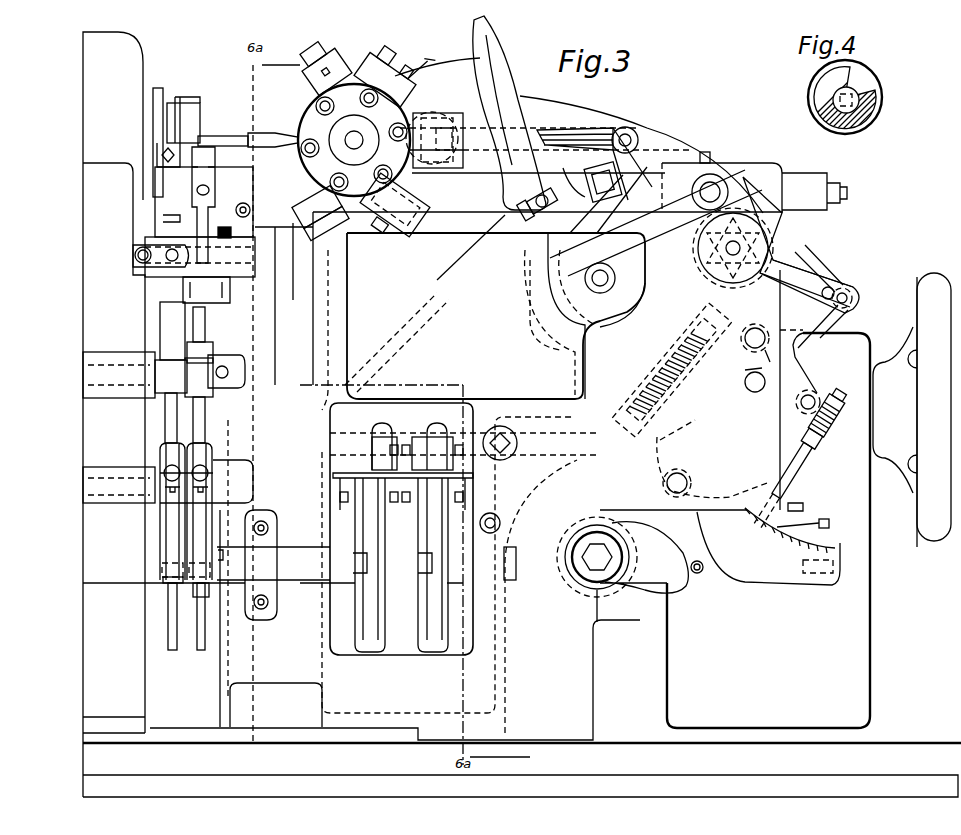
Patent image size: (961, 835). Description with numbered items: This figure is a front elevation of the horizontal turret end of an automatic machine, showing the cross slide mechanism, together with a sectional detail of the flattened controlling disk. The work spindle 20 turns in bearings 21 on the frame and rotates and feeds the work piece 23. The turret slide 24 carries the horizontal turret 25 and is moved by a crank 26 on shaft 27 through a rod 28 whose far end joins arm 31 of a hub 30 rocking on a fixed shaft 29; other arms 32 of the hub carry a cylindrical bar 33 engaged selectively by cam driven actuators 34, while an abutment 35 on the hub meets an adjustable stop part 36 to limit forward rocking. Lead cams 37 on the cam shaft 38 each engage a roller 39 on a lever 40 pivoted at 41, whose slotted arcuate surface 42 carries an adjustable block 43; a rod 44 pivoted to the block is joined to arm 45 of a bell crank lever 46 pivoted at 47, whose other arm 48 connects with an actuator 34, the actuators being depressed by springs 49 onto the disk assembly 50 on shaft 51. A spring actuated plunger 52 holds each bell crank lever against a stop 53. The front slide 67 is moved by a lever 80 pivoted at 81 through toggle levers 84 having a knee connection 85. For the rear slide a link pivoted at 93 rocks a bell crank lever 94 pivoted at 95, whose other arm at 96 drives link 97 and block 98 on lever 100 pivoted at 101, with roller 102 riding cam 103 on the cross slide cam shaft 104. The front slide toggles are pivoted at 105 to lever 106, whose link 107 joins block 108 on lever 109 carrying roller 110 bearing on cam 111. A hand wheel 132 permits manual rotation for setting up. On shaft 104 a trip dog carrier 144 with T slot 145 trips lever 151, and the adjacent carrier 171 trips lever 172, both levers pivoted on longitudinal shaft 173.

In FIG. 3, the work spindle 20 is at (185, 105).
In FIG. 3, the bearings 21 is at (150, 84).
In FIG. 3, the work piece 23 is at (228, 135).
In FIG. 3, the slide 24 is at (548, 279).
In FIG. 3, the horizontal turret 25 is at (300, 125).
In FIG. 3, the crank 26 is at (458, 118).
In FIG. 3, the shaft 27 is at (435, 130).
In FIG. 3, the rod 28 is at (560, 125).
In FIG. 3, the shaft 29 is at (600, 268).
In FIG. 3, the hub 30 is at (532, 300).
In FIG. 3, the arm 31 is at (652, 150).
In FIG. 3, the arms 32 is at (675, 253).
In FIG. 3, the cylindrical bar 33 is at (715, 185).
In FIG. 3, the actuators 34 is at (805, 260).
In FIG. 3, the abutment 35 is at (570, 163).
In FIG. 3, the adjustable stop part 36 is at (545, 195).
In FIG. 3, the lead cams 37 is at (682, 585).
In FIG. 3, the cam shaft 38 is at (590, 570).
In FIG. 3, the roller 39 is at (700, 575).
In FIG. 3, the lever 40 is at (815, 583).
In FIG. 3, the pivot 41 is at (688, 483).
In FIG. 3, the slotted arcuate surface 42 is at (715, 500).
In FIG. 3, the block 43 is at (814, 518).
In FIG. 3, the rod 44 is at (838, 398).
In FIG. 3, the arm 45 is at (805, 372).
In FIG. 3, the bell crank lever 46 is at (750, 384).
In FIG. 3, the pivot 47 is at (750, 345).
In FIG. 3, the arm 48 is at (852, 298).
In FIG. 3, the springs 49 is at (835, 270).
In FIG. 3, the disk assembly 50 is at (730, 275).
In FIG. 4, the disk assembly 50 is at (878, 110).
In FIG. 3, the shaft 51 is at (720, 262).
In FIG. 4, the shaft 51 is at (856, 88).
In FIG. 3, the spring actuated plunger 52 is at (718, 318).
In FIG. 3, the stop 53 is at (755, 392).
In FIG. 3, the front slide 67 is at (252, 186).
In FIG. 3, the lever 80 is at (195, 200).
In FIG. 3, the pivot 81 is at (133, 255).
In FIG. 3, the toggle levers 84 is at (256, 258).
In FIG. 3, the knee connection 85 is at (232, 295).
In FIG. 3, the pivot 93 is at (160, 312).
In FIG. 3, the bell crank lever 94 is at (165, 340).
In FIG. 3, the pivot 95 is at (248, 372).
In FIG. 3, the pivot 96 is at (150, 375).
In FIG. 3, the link 97 is at (168, 420).
In FIG. 3, the block 98 is at (160, 478).
In FIG. 3, the lever 100 is at (174, 511).
In FIG. 3, the pivot 101 is at (245, 485).
In FIG. 3, the roller 102 is at (165, 583).
In FIG. 3, the cam 103 is at (170, 650).
In FIG. 3, the cross slide cam shaft 104 is at (280, 542).
In FIG. 3, the pivot 105 is at (214, 362).
In FIG. 3, the lever 106 is at (214, 350).
In FIG. 3, the link 107 is at (206, 420).
In FIG. 3, the block 108 is at (236, 472).
In FIG. 3, the lever 109 is at (201, 511).
In FIG. 3, the roller 110 is at (210, 600).
In FIG. 3, the cam 111 is at (200, 650).
In FIG. 3, the hand wheel 132 is at (930, 540).
In FIG. 3, the trip dog carrier 144 is at (433, 653).
In FIG. 3, the T slot 145 is at (424, 575).
In FIG. 3, the trip lever 151 is at (470, 465).
In FIG. 3, the carrier 171 is at (370, 653).
In FIG. 3, the lever 172 is at (335, 475).
In FIG. 3, the longitudinal shaft 173 is at (535, 480).